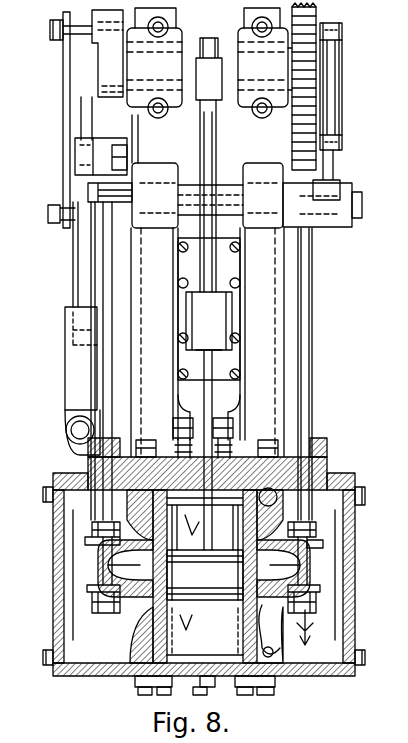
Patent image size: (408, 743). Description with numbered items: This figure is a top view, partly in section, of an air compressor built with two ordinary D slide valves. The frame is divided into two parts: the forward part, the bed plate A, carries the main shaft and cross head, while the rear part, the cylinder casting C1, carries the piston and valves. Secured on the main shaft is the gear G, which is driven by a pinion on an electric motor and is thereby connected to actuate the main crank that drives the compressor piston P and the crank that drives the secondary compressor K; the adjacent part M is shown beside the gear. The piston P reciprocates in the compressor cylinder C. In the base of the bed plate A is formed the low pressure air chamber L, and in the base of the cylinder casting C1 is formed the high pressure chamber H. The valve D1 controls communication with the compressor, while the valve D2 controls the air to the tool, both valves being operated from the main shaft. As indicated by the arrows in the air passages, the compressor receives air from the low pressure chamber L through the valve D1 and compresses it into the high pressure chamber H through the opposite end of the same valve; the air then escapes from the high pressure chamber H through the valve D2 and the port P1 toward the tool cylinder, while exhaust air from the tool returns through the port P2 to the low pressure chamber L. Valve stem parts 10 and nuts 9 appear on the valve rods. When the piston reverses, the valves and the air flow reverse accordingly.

The gear G is at (312, 17).
The motor shaft bearing M is at (343, 62).
The bed plate A is at (193, 394).
The secondary compressor K is at (83, 328).
The port P2 is at (268, 497).
The slide valve D1 is at (98, 542).
The slide valve D2 is at (320, 542).
The valve stem 10 is at (373, 575).
The lower valve nut 9 is at (373, 602).
The high pressure air chamber H is at (213, 591).
The compressor piston P is at (205, 575).
The compressor cylinder C is at (205, 631).
The low pressure air chamber L is at (204, 574).
The cylinder casting C1 is at (113, 667).
The port P1 is at (270, 655).